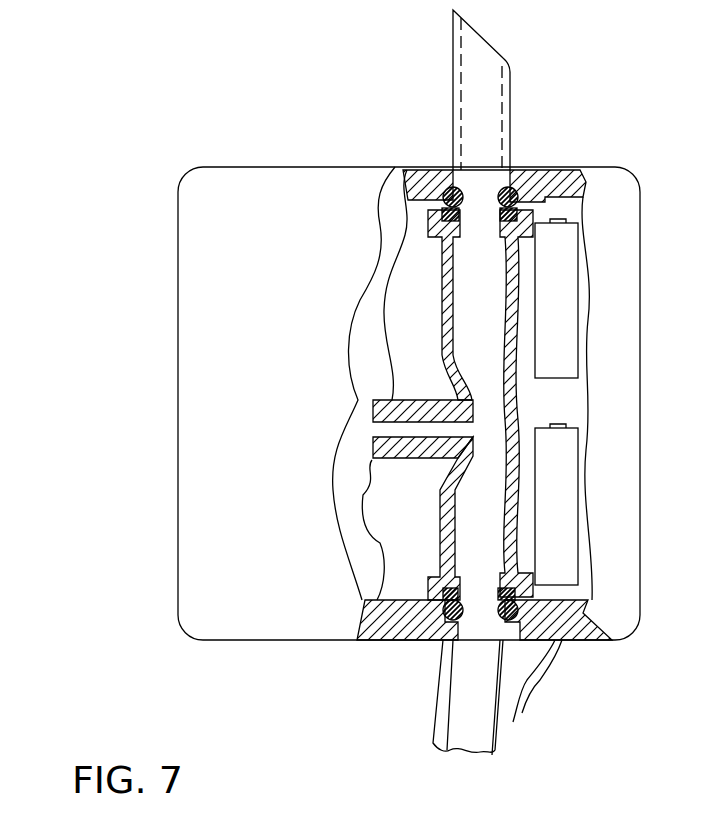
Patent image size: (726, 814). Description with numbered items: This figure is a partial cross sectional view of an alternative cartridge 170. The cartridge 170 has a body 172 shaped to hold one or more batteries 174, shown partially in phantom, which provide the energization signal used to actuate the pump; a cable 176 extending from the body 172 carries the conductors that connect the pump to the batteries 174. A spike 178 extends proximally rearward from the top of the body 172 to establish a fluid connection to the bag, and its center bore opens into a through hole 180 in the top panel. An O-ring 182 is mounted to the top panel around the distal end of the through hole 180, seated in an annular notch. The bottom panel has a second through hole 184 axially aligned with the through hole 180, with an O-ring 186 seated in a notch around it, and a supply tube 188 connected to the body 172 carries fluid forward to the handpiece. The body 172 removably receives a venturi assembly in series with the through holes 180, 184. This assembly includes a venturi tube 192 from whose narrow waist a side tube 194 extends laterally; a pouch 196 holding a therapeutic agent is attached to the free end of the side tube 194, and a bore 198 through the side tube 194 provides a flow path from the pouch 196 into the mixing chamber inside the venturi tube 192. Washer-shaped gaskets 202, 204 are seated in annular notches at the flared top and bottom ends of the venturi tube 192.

The cartridge 170 is at (178, 237).
The body 172 is at (257, 238).
The batteries 174 is at (577, 254).
The cable 176 is at (546, 680).
The spike 178 is at (510, 122).
The through hole 180 is at (480, 143).
The O-ring 182 is at (522, 190).
The second through hole 184 is at (478, 648).
The O-ring 186 is at (430, 642).
The supply tube 188 is at (437, 730).
The venturi tube 192 is at (497, 298).
The side tube 194 is at (418, 460).
The pouch 196 is at (387, 270).
The bore 198 is at (392, 405).
The gasket 202 is at (440, 213).
The gasket 204 is at (538, 590).